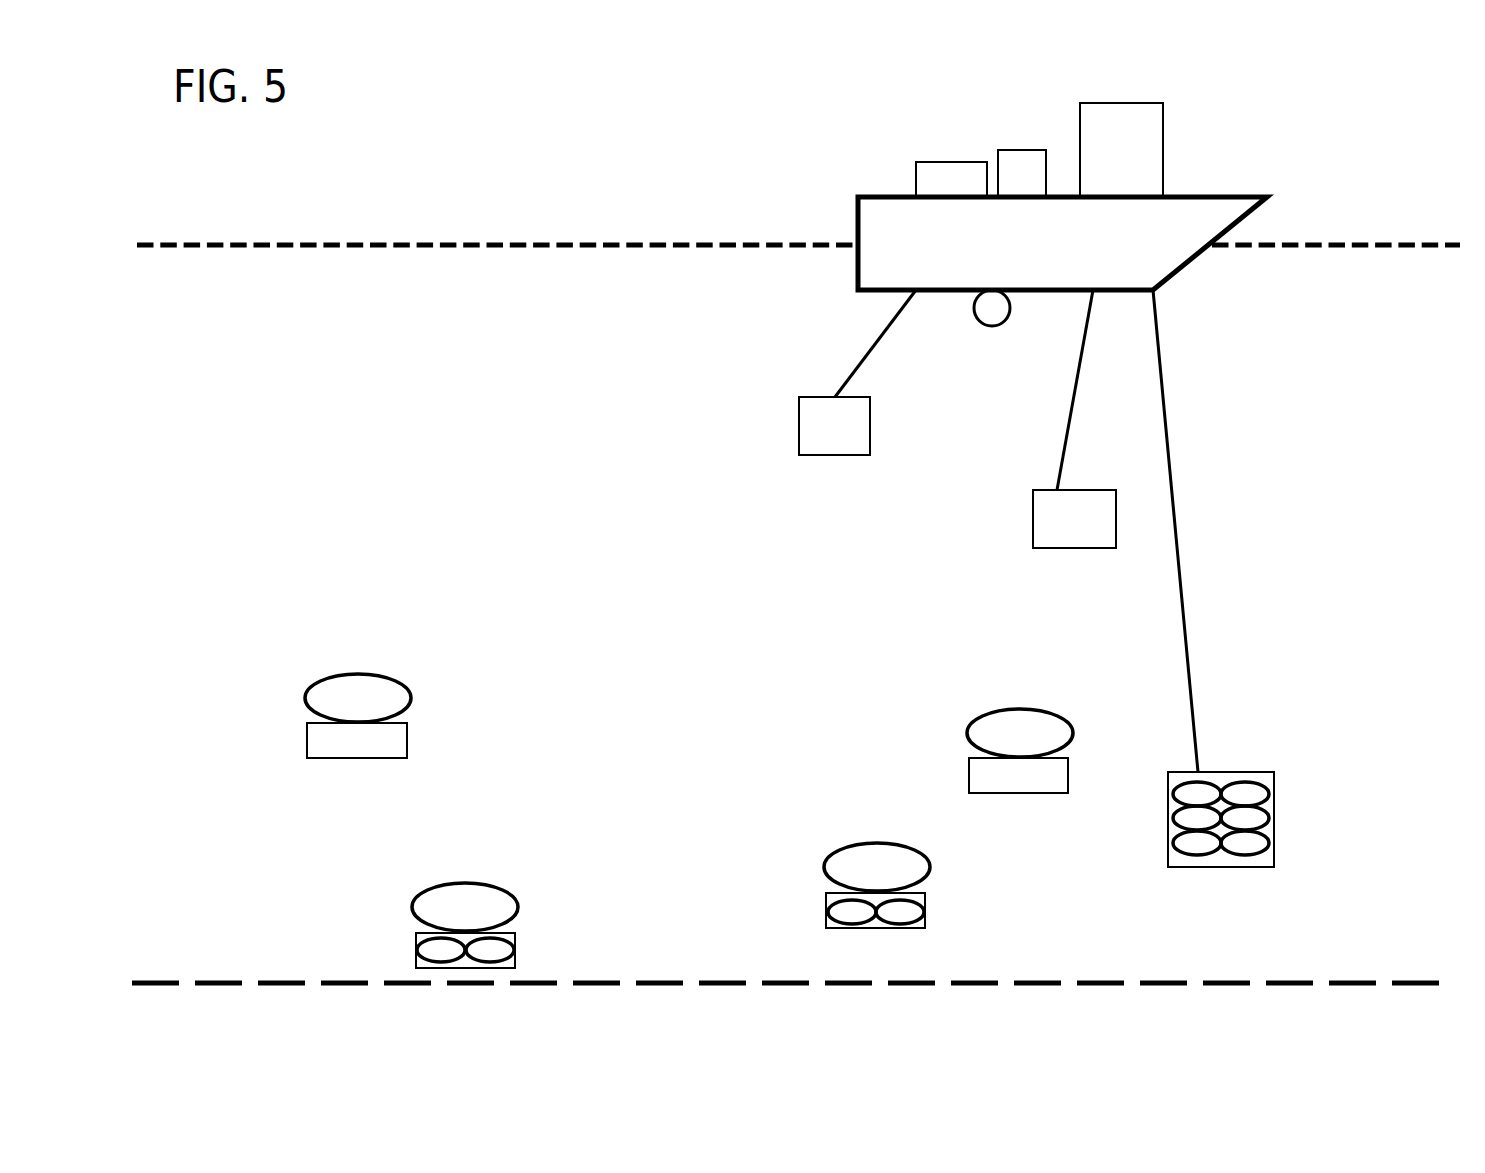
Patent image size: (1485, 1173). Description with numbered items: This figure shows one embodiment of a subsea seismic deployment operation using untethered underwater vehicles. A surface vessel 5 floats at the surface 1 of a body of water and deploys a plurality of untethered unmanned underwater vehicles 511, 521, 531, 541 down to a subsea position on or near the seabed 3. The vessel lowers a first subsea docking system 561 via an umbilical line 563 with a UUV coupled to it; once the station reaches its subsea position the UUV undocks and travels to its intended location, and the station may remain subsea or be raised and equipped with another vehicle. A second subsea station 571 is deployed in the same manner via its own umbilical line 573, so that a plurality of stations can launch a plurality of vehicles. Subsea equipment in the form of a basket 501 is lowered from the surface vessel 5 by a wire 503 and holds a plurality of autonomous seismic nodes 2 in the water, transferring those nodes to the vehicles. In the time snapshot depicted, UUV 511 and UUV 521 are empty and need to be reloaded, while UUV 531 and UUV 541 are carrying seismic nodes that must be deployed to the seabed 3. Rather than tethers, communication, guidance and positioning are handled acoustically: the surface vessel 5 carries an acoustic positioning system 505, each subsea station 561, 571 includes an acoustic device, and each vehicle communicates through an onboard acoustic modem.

The surface 1 is at (192, 247).
The autonomous seismic nodes 2 is at (1248, 793).
The seabed 3 is at (1327, 980).
The surface vessel 5 is at (1243, 197).
The basket 501 is at (1158, 845).
The wire 503 is at (1163, 431).
The acoustic positioning system 505 is at (992, 327).
The untethered unmanned underwater vehicle 511 is at (318, 699).
The untethered unmanned underwater vehicle 521 is at (987, 731).
The untethered unmanned underwater vehicle 531 is at (838, 863).
The untethered unmanned underwater vehicle 541 is at (425, 917).
The first subsea docking system 561 is at (799, 420).
The umbilical line 563 is at (855, 362).
The subsea station 571 is at (1033, 515).
The umbilical line 573 is at (1057, 457).